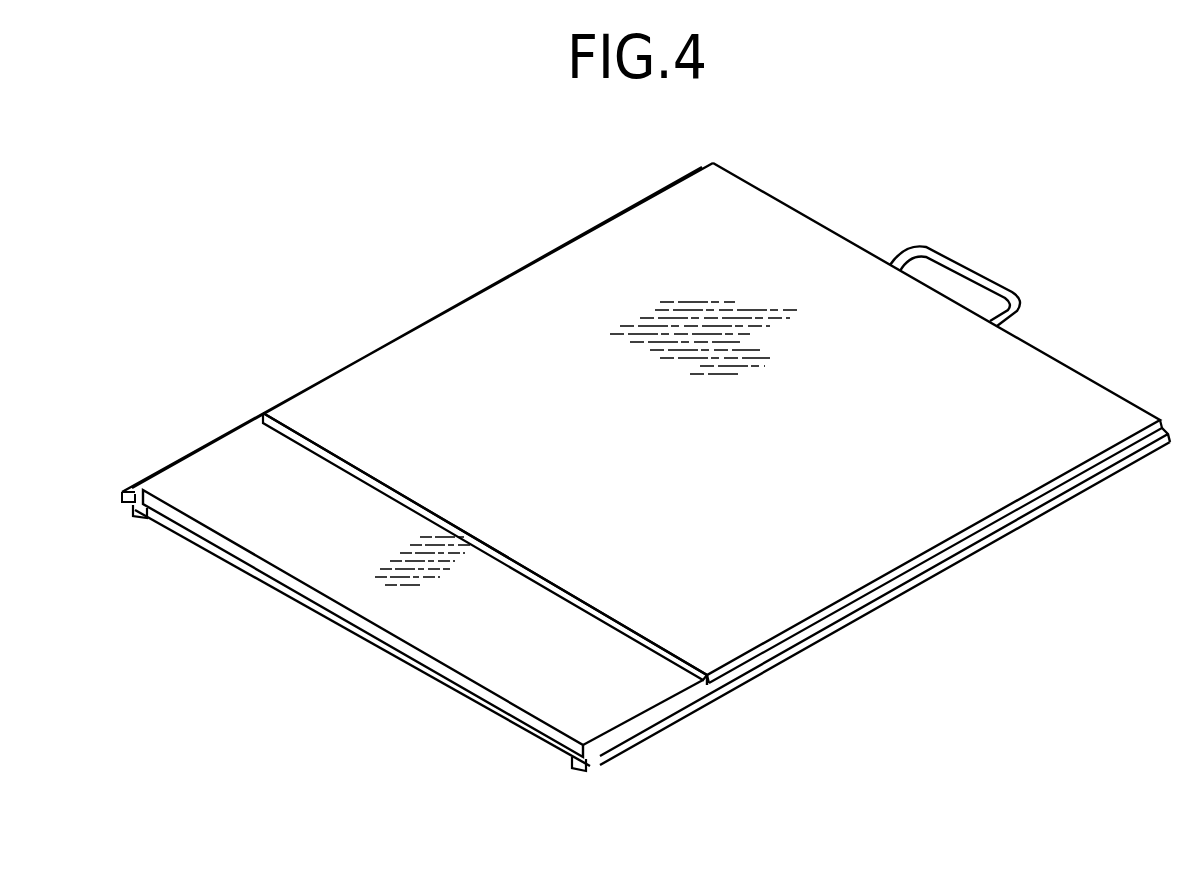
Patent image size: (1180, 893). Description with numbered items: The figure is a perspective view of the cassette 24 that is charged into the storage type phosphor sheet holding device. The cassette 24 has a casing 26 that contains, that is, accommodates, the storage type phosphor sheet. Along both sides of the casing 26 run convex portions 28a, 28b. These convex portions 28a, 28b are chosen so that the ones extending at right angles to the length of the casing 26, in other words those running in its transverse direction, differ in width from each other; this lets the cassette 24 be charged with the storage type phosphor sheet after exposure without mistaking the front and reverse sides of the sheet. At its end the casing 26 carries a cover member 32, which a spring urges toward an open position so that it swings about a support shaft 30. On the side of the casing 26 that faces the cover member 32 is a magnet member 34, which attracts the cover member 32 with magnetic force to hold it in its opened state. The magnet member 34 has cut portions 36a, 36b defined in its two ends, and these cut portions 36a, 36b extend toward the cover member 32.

The cassette 24 is at (774, 183).
The casing 26 is at (500, 305).
The convex portion 28a is at (815, 630).
The convex portion 28b is at (124, 489).
The support shaft 30 is at (703, 686).
The cover member 32 is at (245, 535).
The magnet member 34 is at (300, 612).
The cut portion 36a is at (572, 760).
The cut portion 36b is at (150, 517).